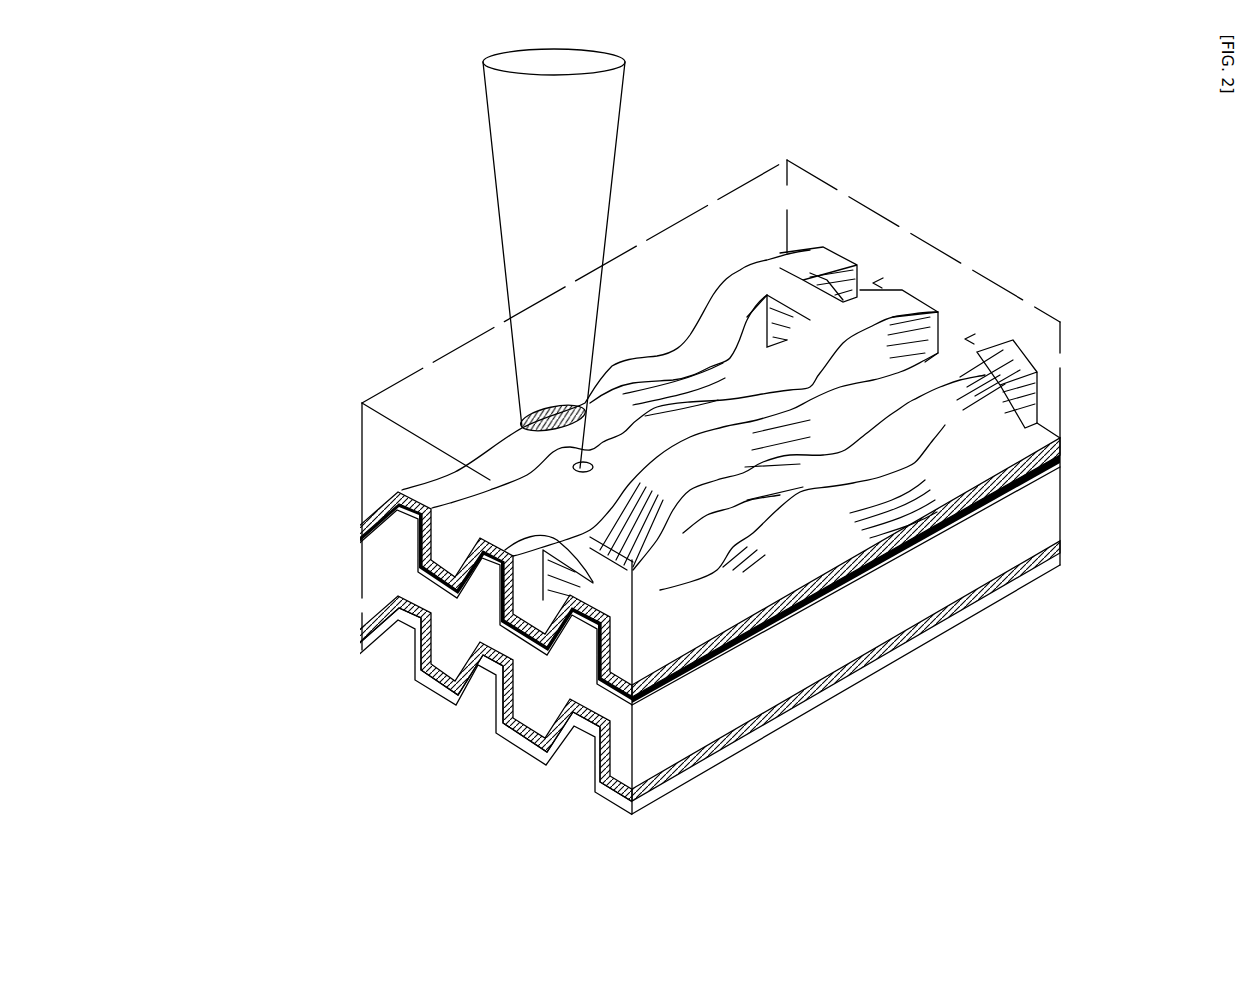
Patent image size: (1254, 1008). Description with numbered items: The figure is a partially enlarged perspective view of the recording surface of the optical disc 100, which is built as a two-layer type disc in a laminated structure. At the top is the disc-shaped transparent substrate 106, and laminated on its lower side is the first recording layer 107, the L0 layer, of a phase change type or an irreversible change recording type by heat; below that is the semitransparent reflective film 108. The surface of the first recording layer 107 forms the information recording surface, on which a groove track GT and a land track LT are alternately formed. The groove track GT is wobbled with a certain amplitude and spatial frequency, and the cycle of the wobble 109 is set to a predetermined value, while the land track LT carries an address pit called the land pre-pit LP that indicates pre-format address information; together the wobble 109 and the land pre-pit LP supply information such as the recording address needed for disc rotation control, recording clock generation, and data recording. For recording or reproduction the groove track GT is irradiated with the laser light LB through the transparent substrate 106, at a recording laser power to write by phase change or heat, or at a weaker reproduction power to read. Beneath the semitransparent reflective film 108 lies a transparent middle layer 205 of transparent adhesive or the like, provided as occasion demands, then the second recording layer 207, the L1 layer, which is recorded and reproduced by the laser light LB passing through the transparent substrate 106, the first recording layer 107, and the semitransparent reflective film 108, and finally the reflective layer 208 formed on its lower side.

The optical disc 100 is at (1008, 711).
The transparent substrate 106 is at (382, 448).
The first recording layer 107 is at (365, 525).
The semitransparent reflective film 108 is at (373, 543).
The wobble 109 is at (765, 552).
The transparent middle layer 205 is at (373, 568).
The second recording layer 207 is at (373, 635).
The reflective layer 208 is at (377, 642).
The laser light LB is at (488, 127).
The land pre-pit LP is at (807, 297).
The groove track GT is at (822, 258).
The land track LT is at (873, 283).